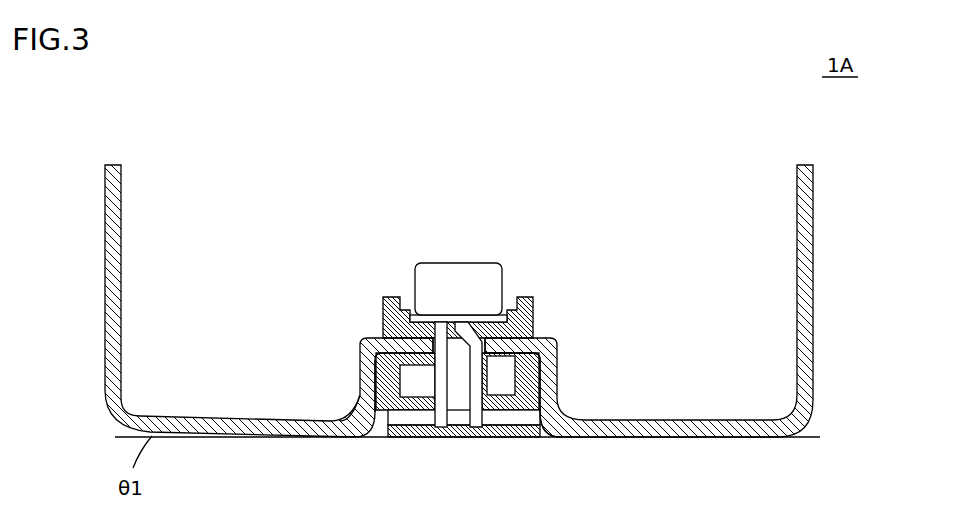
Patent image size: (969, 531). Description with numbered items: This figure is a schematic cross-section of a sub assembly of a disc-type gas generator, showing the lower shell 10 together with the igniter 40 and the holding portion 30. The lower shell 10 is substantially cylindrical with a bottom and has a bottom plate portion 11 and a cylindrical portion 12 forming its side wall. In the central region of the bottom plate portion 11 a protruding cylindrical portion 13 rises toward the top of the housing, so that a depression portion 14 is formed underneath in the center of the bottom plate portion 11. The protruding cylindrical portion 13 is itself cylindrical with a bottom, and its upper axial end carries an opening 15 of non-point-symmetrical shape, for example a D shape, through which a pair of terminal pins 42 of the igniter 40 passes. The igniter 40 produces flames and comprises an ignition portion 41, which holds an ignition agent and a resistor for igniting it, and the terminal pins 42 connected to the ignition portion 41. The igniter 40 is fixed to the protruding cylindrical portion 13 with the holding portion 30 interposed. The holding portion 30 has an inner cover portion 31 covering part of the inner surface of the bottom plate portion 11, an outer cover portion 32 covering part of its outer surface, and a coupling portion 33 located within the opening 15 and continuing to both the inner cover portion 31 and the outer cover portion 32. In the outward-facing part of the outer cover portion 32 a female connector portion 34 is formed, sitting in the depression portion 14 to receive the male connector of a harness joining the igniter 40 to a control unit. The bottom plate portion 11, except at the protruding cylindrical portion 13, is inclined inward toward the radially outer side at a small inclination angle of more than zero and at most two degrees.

The lower shell 10 is at (496, 295).
The bottom plate portion 11 is at (718, 425).
The cylindrical portion 12 is at (807, 248).
The protruding cylindrical portion 13 is at (366, 392).
The depression portion 14 is at (385, 378).
The opening 15 is at (487, 348).
The holding portion 30 is at (545, 440).
The inner cover portion 31 is at (522, 317).
The outer cover portion 32 is at (532, 378).
The coupling portion 33 is at (460, 350).
The female connector portion 34 is at (507, 397).
The igniter 40 is at (422, 258).
The ignition portion 41 is at (474, 290).
The terminal pins 42 is at (440, 383).